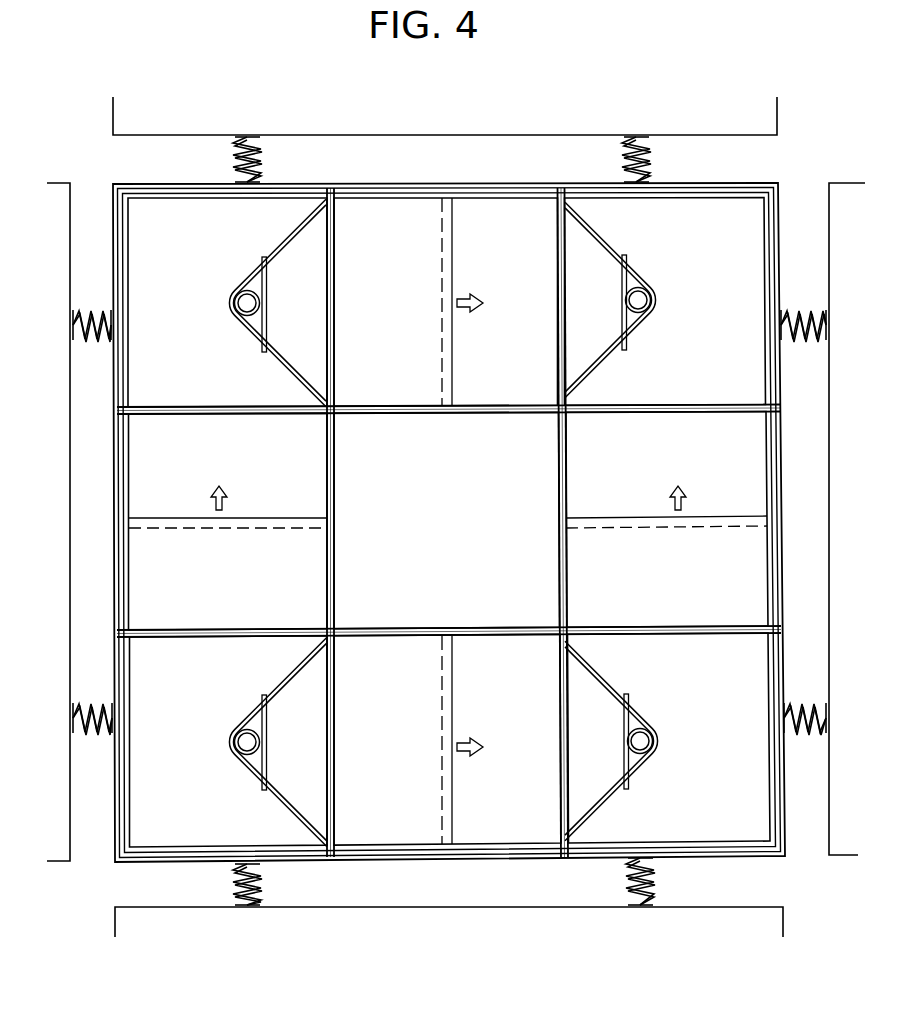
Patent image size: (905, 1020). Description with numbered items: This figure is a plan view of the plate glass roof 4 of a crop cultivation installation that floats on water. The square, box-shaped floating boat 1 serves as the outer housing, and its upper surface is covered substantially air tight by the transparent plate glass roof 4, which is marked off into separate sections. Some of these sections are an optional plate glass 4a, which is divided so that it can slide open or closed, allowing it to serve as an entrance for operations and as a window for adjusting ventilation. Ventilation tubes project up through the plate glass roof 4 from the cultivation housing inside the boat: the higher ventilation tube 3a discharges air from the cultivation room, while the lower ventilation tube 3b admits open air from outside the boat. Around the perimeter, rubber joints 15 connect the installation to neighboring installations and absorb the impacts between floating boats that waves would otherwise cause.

The floating boat 1 is at (422, 185).
The plate glass roof 4 is at (180, 215).
The optional plate glass 4a is at (496, 220).
The higher ventilation tube 3a is at (258, 286).
The lower ventilation tube 3b is at (633, 318).
The rubber joint 15 is at (253, 158).